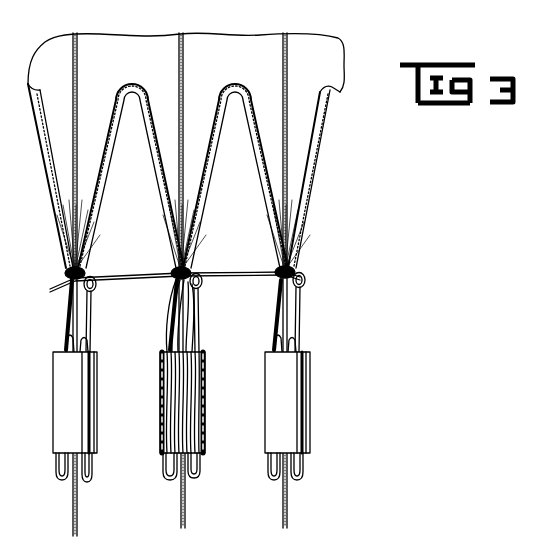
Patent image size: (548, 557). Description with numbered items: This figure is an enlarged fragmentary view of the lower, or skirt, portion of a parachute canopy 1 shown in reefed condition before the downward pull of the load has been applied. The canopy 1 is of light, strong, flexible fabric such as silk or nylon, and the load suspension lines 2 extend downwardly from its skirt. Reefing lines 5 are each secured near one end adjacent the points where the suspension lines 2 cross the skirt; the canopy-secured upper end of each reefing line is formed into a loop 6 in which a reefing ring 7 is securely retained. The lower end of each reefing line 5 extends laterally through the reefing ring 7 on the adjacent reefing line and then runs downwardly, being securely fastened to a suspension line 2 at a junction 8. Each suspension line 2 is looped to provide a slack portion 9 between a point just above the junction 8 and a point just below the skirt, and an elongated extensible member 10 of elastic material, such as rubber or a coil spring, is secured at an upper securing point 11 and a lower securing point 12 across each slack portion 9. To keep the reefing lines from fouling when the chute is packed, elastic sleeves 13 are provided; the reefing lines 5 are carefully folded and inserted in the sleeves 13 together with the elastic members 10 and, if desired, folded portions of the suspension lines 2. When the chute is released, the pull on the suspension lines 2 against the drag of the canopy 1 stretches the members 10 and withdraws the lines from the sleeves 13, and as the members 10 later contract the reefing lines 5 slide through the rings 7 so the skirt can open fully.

The parachute canopy 1 is at (300, 135).
The load suspension lines 2 is at (78, 71).
The reefing lines 5 is at (133, 280).
The loop 6 is at (92, 267).
The reefing ring 7 is at (97, 289).
The junction 8 is at (200, 457).
The slack portion 9 is at (162, 473).
The extensible member 10 is at (185, 332).
The securing point 11 is at (68, 320).
The securing point 12 is at (205, 425).
The sleeve 13 is at (197, 402).